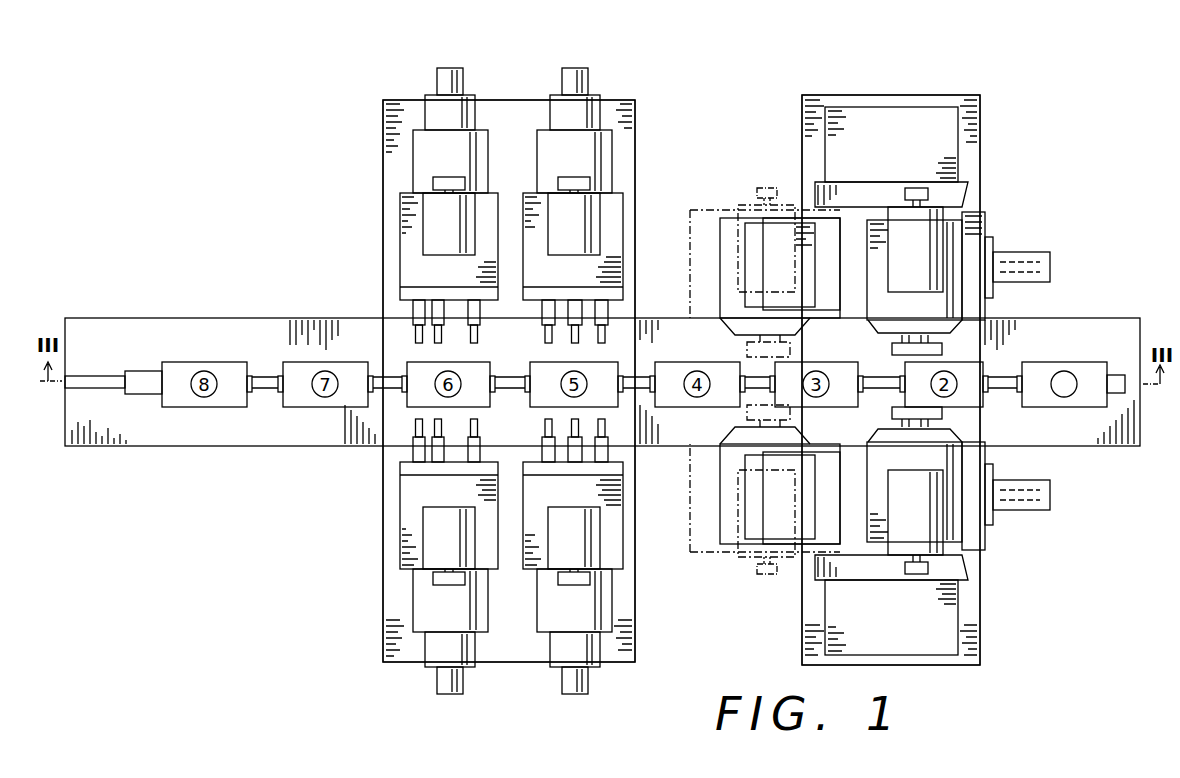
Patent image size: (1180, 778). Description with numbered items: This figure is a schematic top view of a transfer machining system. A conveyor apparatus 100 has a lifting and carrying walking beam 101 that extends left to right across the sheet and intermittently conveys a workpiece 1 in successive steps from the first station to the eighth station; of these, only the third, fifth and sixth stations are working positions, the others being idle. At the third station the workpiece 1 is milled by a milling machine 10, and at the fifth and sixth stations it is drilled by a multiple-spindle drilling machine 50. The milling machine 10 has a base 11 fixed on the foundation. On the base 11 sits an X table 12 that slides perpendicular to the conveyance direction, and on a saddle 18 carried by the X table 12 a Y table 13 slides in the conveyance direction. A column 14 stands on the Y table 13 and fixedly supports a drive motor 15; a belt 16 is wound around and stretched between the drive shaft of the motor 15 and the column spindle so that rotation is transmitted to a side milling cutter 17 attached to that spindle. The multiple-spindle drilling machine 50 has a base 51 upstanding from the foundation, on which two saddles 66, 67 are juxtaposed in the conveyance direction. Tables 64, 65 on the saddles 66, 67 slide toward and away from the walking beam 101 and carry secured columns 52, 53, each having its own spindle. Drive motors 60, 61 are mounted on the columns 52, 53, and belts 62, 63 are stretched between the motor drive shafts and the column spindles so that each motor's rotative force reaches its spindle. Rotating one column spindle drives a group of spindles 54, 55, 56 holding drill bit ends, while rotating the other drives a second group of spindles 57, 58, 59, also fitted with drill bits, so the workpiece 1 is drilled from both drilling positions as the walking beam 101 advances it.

The workpiece 1 is at (1098, 378).
The milling machine 10 is at (977, 92).
The base 11 is at (978, 127).
The X table 12 is at (953, 193).
The Y table 13 is at (968, 252).
The column 14 is at (955, 228).
The drive motor 15 is at (900, 212).
The belt 16 is at (925, 127).
The side milling cutter 17 is at (943, 350).
The saddle 18 is at (787, 233).
The multiple-spindle drilling machine 50 is at (630, 80).
The base 51 is at (613, 118).
The column 52 is at (613, 217).
The column 53 is at (408, 232).
The spindle 54 is at (615, 308).
The spindle 55 is at (578, 316).
The spindle 56 is at (560, 296).
The spindle 57 is at (425, 315).
The spindle 58 is at (440, 293).
The spindle 59 is at (408, 320).
The drive motor 60 is at (603, 200).
The drive motor 61 is at (435, 210).
The belt 62 is at (590, 178).
The belt 63 is at (494, 180).
The table 64 is at (557, 160).
The table 65 is at (422, 143).
The saddle 66 is at (585, 120).
The saddle 67 is at (453, 107).
The conveyor apparatus 100 is at (1078, 332).
The walking beam 101 is at (1123, 396).